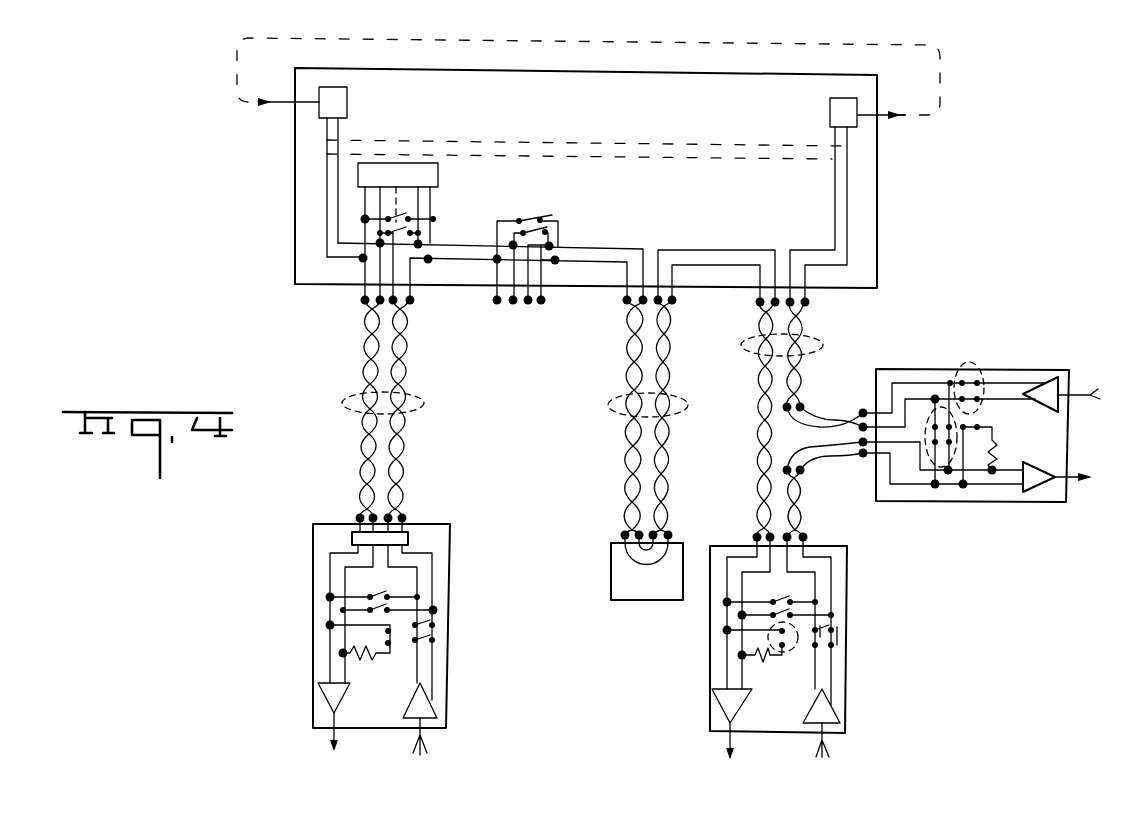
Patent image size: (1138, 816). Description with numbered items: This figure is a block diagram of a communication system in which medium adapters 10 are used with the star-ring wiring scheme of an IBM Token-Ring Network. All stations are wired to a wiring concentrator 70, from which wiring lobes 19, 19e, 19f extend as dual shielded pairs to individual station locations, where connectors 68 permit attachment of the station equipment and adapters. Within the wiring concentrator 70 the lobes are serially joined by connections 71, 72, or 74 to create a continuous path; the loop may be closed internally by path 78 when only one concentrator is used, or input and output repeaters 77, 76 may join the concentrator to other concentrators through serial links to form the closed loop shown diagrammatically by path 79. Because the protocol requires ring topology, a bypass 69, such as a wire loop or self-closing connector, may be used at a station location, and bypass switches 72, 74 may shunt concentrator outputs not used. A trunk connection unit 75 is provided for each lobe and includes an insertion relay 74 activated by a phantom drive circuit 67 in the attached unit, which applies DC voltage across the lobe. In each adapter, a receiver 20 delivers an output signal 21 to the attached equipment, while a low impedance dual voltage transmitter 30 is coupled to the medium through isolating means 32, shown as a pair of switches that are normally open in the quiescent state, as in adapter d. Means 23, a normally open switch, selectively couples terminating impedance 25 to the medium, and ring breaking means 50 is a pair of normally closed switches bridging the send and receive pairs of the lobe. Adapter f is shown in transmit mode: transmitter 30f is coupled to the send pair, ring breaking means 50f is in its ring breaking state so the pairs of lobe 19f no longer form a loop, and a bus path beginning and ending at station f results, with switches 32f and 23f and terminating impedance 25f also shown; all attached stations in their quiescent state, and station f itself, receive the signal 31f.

The path 79 is at (623, 43).
The input repeater 77 is at (348, 105).
The output repeater 76 is at (830, 109).
The path 78 is at (518, 141).
The trunk connection unit (TCU) 75 is at (438, 176).
The insertion relay 74 is at (397, 222).
The bypass switch 72 is at (570, 213).
The connection 71 is at (723, 250).
The wiring concentrator 70 is at (877, 224).
The medium adapter 10 is at (306, 587).
The wiring lobe 19f is at (347, 401).
The wiring lobe 19 is at (608, 407).
The wiring lobe 19e is at (807, 342).
The connector 68 is at (407, 517).
The phantom drive circuit 67 is at (352, 538).
The bypass 69 is at (617, 587).
The ring breaking means 50f is at (380, 587).
The means for isolating the transmitter 32f is at (427, 635).
The means for coupling the terminating impedance 23f is at (398, 646).
The terminating impedance 25f is at (353, 662).
The transmitter 30f is at (427, 710).
The signal 31f is at (428, 738).
The means for isolating the transmitter 32 is at (973, 360).
The transmitter 30 is at (1050, 378).
The ring breaking means 50 is at (930, 457).
The terminating impedance 25 is at (758, 647).
The receiver 20 is at (1040, 484).
The output signal 21 is at (1084, 490).
The means for coupling the terminating impedance 23 is at (798, 652).